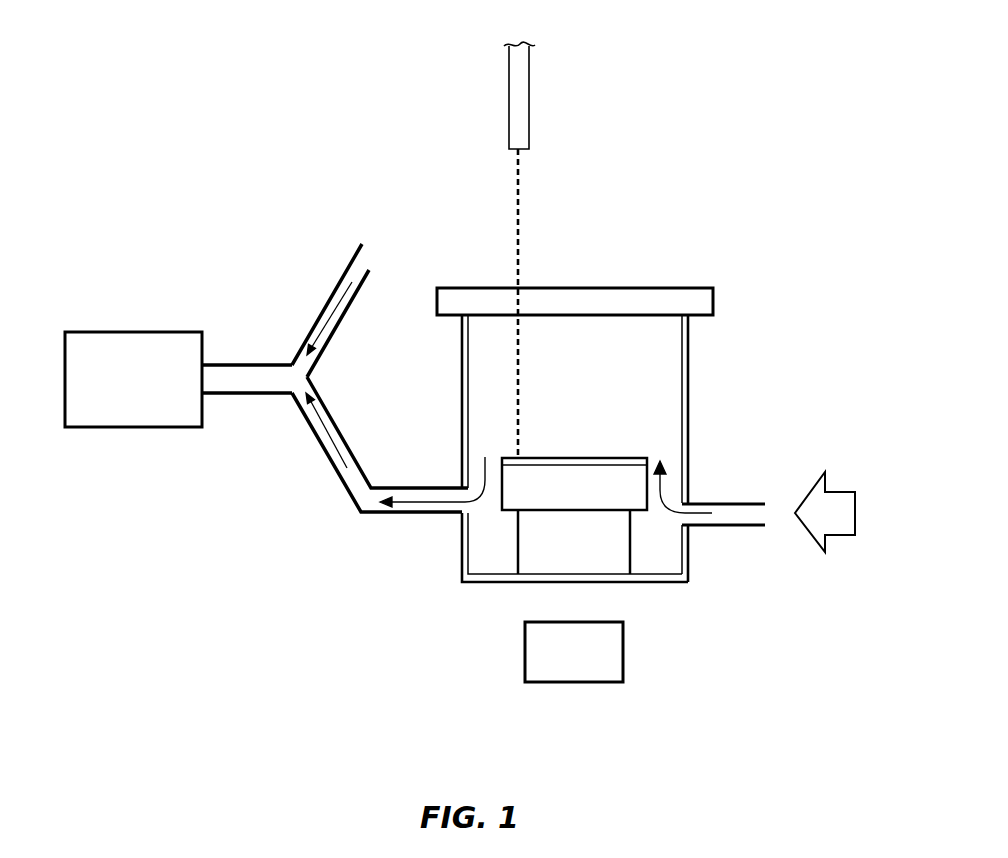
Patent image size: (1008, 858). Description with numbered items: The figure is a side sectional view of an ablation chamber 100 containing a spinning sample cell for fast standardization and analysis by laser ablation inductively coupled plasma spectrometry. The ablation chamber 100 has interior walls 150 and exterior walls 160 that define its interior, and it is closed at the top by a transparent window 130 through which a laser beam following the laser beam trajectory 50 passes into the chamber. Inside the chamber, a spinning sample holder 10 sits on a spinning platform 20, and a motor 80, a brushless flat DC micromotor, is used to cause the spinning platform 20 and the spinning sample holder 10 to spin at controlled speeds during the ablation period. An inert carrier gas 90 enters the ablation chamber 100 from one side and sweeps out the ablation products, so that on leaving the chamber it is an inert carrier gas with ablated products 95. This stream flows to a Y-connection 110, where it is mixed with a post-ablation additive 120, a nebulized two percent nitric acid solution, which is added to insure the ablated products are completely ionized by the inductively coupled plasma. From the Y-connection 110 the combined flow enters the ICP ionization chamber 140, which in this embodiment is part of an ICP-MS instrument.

The spinning sample holder 10 is at (574, 484).
The spinning platform 20 is at (574, 542).
The laser beam trajectory 50 is at (518, 192).
The motor 80 is at (574, 652).
The inert carrier gas 90 is at (658, 486).
The inert carrier gas with ablated products 95 is at (323, 433).
The ablation chamber 100 is at (612, 440).
The Y-connection 110 is at (250, 372).
The post-ablation additive 120 is at (330, 300).
The transparent window 130 is at (709, 269).
The ICP ionization chamber 140 is at (133, 379).
The interior walls 150 is at (666, 340).
The exterior walls 160 is at (701, 330).